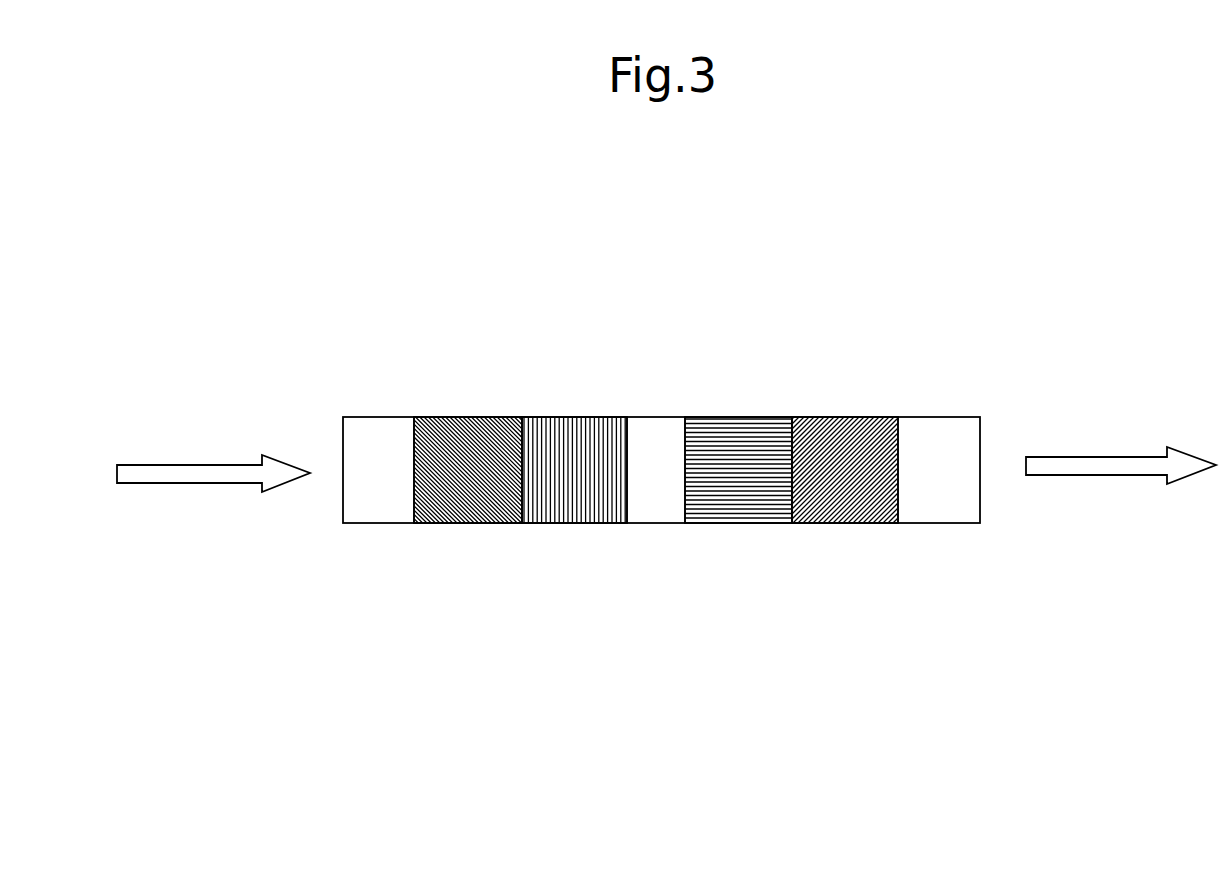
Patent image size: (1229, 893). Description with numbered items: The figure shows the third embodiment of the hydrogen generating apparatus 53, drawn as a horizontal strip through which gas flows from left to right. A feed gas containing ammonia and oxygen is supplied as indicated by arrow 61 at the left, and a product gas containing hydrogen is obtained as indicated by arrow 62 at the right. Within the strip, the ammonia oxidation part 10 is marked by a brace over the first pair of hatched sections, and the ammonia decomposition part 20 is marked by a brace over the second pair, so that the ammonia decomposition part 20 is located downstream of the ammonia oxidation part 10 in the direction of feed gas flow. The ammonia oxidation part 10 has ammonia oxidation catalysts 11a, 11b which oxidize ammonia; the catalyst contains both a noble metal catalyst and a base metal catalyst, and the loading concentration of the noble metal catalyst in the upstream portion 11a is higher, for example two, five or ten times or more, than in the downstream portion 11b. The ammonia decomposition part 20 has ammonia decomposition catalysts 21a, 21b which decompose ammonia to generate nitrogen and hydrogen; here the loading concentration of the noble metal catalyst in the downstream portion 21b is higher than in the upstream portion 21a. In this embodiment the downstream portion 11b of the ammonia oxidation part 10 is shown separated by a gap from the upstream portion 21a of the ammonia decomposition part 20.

The hydrogen generating apparatus 53 is at (957, 340).
The ammonia oxidation part 10 is at (627, 393).
The ammonia decomposition part 20 is at (897, 392).
The upstream portion of the ammonia oxidation part 11a is at (467, 512).
The downstream portion of the ammonia oxidation part 11b is at (587, 512).
The upstream portion of the ammonia decomposition part 21a is at (748, 512).
The downstream portion of the ammonia decomposition part 21b is at (878, 512).
The arrow indicating feed gas supply 61 is at (160, 466).
The arrow indicating product gas 62 is at (1070, 460).